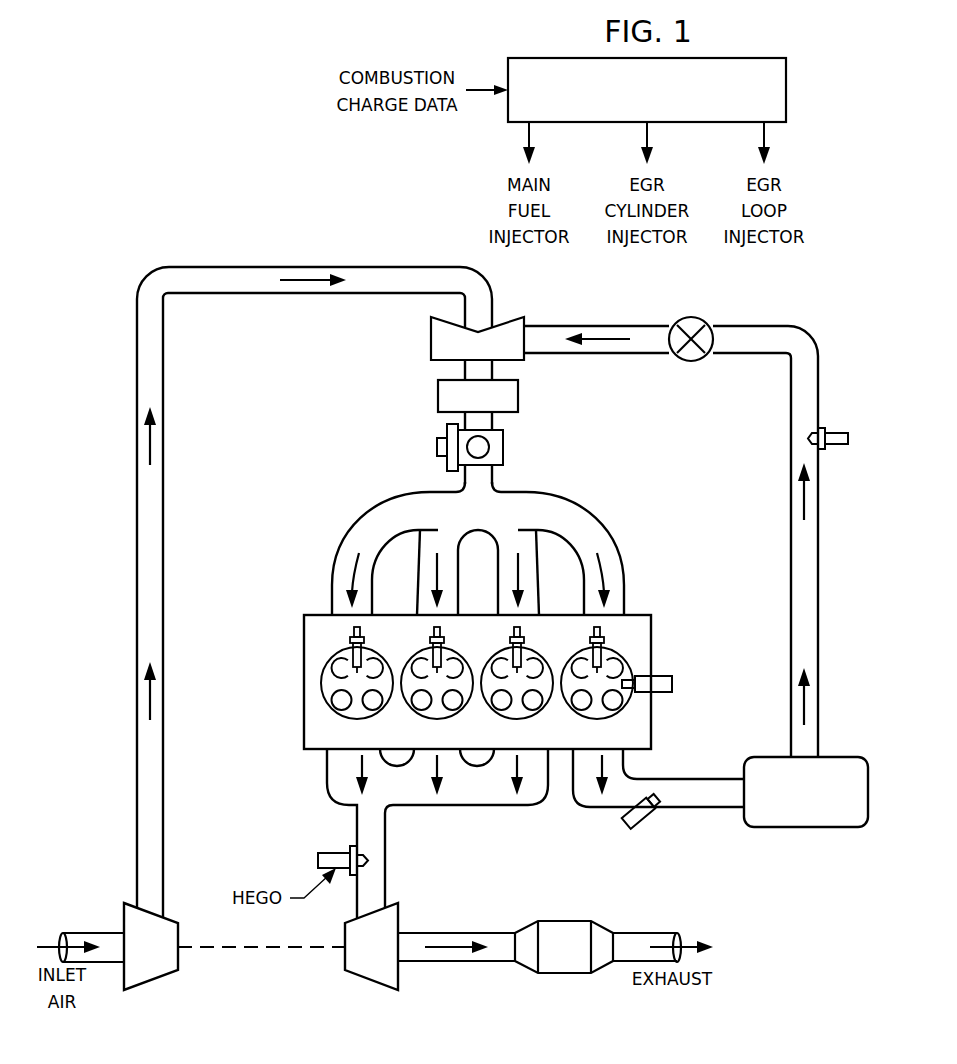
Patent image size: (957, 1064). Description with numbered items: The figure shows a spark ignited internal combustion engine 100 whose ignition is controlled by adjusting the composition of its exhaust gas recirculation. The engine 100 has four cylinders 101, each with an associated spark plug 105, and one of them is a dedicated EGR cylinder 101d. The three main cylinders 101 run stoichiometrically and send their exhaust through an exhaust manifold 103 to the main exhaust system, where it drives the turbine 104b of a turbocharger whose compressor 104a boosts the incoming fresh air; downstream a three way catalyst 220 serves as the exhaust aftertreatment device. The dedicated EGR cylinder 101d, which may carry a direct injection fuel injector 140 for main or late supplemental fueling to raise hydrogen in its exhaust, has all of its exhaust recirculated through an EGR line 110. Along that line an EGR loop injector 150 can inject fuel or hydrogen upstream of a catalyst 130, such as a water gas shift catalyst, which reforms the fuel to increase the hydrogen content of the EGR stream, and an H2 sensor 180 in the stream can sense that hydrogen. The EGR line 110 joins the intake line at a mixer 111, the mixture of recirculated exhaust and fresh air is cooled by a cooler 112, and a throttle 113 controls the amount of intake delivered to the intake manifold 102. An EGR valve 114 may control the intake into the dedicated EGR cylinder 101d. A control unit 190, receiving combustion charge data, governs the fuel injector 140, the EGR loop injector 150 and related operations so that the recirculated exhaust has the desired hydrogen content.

The control unit 190 is at (786, 80).
The mixer 111 is at (431, 338).
The cooler 112 is at (438, 393).
The throttle 113 is at (503, 448).
The EGR valve 114 is at (693, 317).
The intake manifold 102 is at (396, 491).
The spark ignited internal combustion engine 100 is at (678, 642).
The cylinder 101 is at (330, 680).
The dedicated EGR cylinder 101d is at (642, 710).
The spark plug 105 is at (335, 640).
The direct injection fuel injector 140 is at (672, 684).
The exhaust manifold 103 is at (462, 806).
The EGR line 110 is at (820, 578).
The H2 sensor 180 is at (836, 428).
The EGR loop injector 150 is at (628, 826).
The catalyst 130 is at (830, 828).
The compressor 104a is at (148, 983).
The turbine 104b is at (368, 983).
The three-way catalyst 220 is at (563, 975).